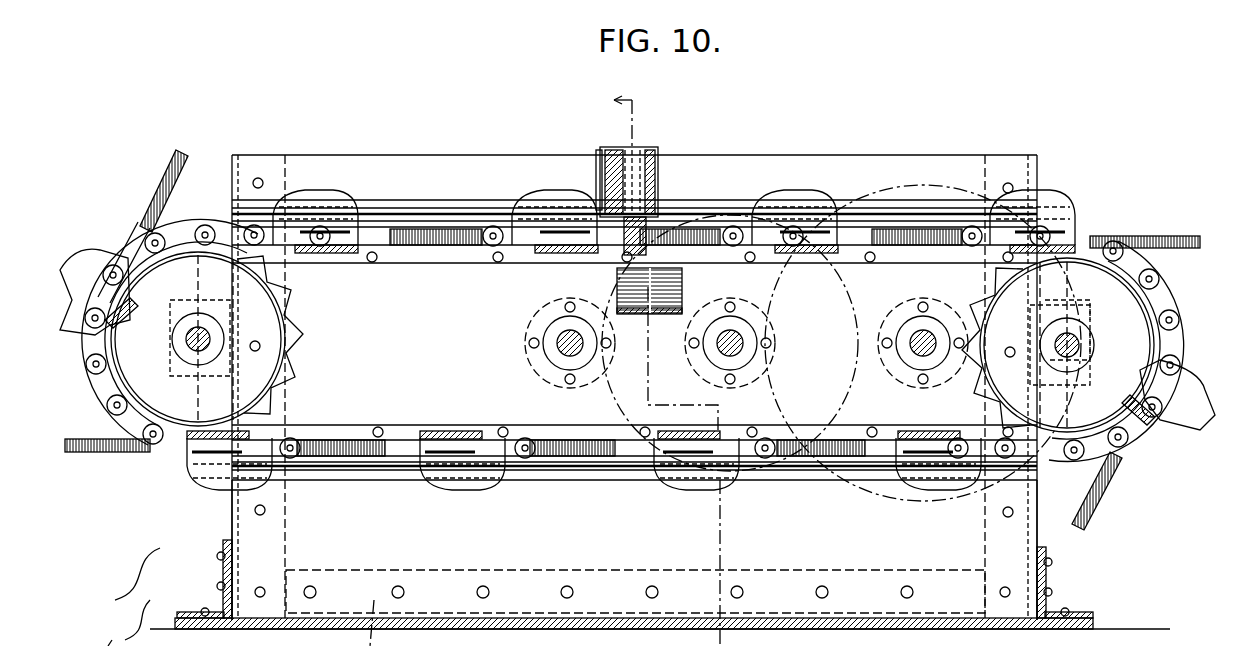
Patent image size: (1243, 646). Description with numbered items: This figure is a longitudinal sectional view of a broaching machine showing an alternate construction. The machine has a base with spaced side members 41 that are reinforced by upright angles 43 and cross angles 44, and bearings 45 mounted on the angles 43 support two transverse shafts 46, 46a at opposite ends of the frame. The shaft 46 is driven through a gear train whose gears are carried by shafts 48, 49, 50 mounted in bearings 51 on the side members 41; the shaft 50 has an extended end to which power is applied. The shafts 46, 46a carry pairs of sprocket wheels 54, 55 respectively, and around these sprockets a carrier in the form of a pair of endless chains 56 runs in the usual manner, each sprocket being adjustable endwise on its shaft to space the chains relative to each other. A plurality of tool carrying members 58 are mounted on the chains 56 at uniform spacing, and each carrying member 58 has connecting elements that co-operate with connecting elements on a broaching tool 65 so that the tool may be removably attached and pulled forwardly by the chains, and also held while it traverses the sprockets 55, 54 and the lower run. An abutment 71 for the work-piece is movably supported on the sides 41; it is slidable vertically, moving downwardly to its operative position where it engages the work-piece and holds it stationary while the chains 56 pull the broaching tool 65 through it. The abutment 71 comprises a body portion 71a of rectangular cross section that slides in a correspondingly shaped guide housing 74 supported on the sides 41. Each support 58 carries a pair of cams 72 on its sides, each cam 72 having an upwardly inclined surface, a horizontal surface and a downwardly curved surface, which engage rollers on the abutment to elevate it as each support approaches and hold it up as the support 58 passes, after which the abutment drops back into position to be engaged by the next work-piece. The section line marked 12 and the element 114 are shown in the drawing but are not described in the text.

The section line 12 is at (609, 119).
The side members 41 is at (639, 400).
The upright angles 43 is at (240, 517).
The cross angles 44 is at (222, 566).
The bearings 45 is at (1085, 302).
The transverse shaft 46 is at (1085, 345).
The transverse shaft 46a is at (188, 338).
The shaft 48 is at (918, 338).
The shaft 49 is at (722, 352).
The shaft 50 is at (565, 352).
The bearings 51 is at (548, 352).
The sprocket wheels 54 is at (1140, 352).
The sprocket wheels 55 is at (312, 341).
The endless chains 56 is at (195, 228).
The tool carrying member 58 is at (105, 322).
The broaching tool 65 is at (150, 198).
The abutment 71 is at (628, 238).
The body portion 71a is at (658, 192).
The cams 72 is at (336, 196).
The housing 74 is at (656, 152).
The plate 114 is at (602, 150).